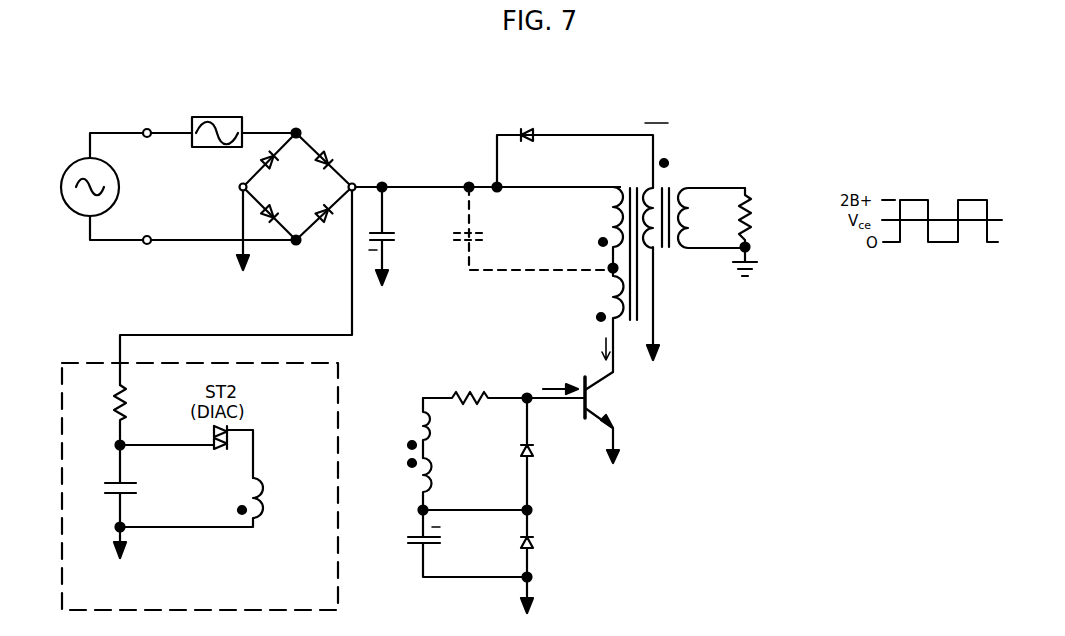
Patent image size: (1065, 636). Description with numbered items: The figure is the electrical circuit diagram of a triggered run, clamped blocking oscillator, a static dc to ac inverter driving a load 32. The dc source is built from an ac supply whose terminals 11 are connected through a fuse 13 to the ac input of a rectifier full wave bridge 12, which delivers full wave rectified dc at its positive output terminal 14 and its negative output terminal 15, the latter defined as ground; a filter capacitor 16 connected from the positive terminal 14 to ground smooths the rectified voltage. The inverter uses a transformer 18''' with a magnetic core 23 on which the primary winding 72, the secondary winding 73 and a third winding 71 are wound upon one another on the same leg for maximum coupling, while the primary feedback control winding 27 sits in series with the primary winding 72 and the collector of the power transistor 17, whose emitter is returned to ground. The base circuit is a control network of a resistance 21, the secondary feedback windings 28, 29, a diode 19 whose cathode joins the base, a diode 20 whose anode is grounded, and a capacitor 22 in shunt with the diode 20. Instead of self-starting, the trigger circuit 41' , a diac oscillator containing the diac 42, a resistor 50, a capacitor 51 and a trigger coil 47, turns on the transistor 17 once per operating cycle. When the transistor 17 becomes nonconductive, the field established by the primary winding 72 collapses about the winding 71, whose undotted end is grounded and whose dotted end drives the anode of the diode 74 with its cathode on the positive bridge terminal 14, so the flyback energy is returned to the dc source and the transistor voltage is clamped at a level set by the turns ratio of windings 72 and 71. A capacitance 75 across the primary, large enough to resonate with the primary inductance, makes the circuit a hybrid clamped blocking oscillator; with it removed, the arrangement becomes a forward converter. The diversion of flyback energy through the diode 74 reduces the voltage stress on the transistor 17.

The ac supply terminals 11 is at (145, 130).
The rectifier full wave bridge 12 is at (307, 199).
The fuse 13 is at (243, 128).
The positive output terminal 14 is at (355, 184).
The negative output terminal 15 is at (237, 189).
The filter capacitor 16 is at (386, 223).
The transistor 17 is at (605, 380).
The transformer 18''' is at (663, 175).
The diode 19 is at (521, 450).
The diode 20 is at (519, 546).
The resistance 21 is at (453, 392).
The capacitor 22 is at (444, 531).
The core 23 is at (640, 303).
The primary feedback control winding 27 is at (611, 299).
The secondary feedback winding 28 is at (422, 421).
The secondary feedback winding 29 is at (422, 477).
The load 32 is at (750, 220).
The trigger circuit 41' is at (228, 486).
The diac 42 is at (217, 450).
The trigger coil 47 is at (257, 478).
The resistor 50 is at (115, 406).
The capacitor 51 is at (111, 497).
The third winding 71 is at (653, 252).
The primary winding 72 is at (615, 185).
The secondary winding 73 is at (686, 185).
The diode 74 is at (525, 142).
The capacitance 75 is at (467, 227).